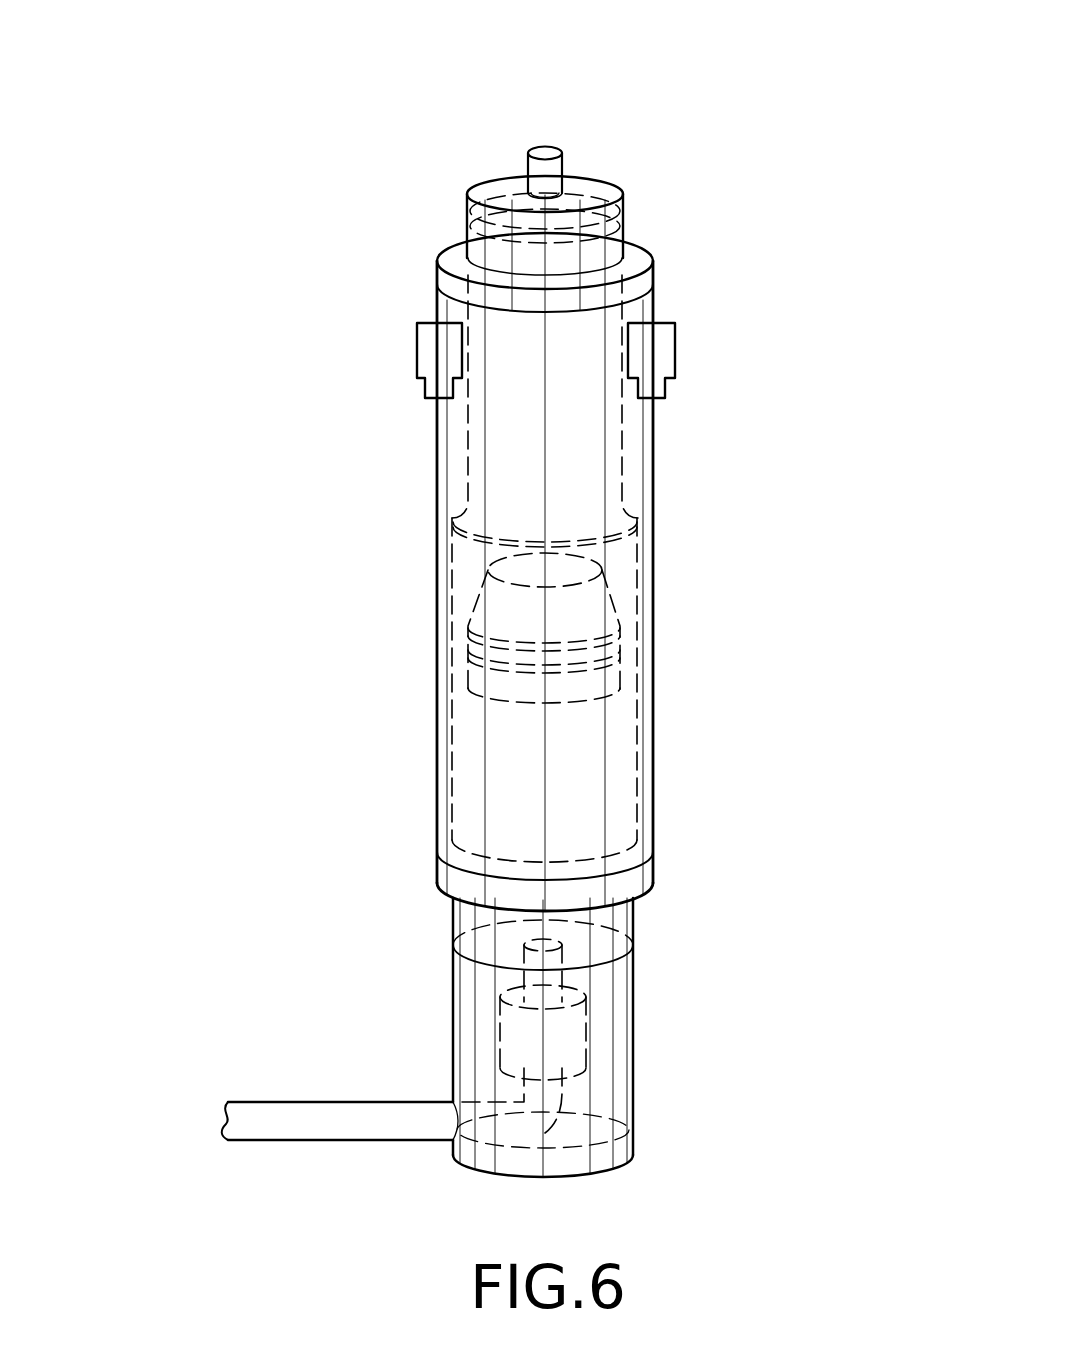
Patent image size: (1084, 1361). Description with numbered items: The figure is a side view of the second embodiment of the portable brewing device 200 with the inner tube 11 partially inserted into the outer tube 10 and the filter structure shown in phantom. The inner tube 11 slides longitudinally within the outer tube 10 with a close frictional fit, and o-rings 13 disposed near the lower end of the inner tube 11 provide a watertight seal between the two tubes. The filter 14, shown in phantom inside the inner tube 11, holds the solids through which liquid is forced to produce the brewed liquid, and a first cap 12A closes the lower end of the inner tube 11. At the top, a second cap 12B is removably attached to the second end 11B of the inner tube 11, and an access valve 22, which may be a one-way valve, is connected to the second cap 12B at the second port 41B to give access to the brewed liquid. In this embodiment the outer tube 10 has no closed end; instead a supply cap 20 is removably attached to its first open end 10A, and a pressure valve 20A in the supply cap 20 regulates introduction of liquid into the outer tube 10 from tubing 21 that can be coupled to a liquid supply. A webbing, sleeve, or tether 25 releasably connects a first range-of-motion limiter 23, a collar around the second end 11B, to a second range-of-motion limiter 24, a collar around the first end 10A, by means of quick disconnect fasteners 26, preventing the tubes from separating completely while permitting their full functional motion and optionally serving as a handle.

The portable brewing device 200 is at (570, 11).
The second port 41B is at (547, 198).
The access valve 22 is at (553, 168).
The second cap 12B is at (602, 178).
The second end 11B is at (467, 223).
The first range-of-motion limiter 23 is at (640, 256).
The quick disconnect fasteners 26 is at (438, 352).
The webbing/sleeve/tether 25 is at (437, 418).
The inner tube 11 is at (468, 480).
The outer tube 10 is at (452, 566).
The filter 14 is at (570, 578).
The o-rings 13 is at (612, 656).
The first cap 12A is at (470, 655).
The first open end 10A is at (452, 790).
The second range-of-motion limiter 24 is at (635, 873).
The pressure valve 20A is at (512, 1042).
The supply cap 20 is at (635, 1050).
The tubing 21 is at (314, 1124).